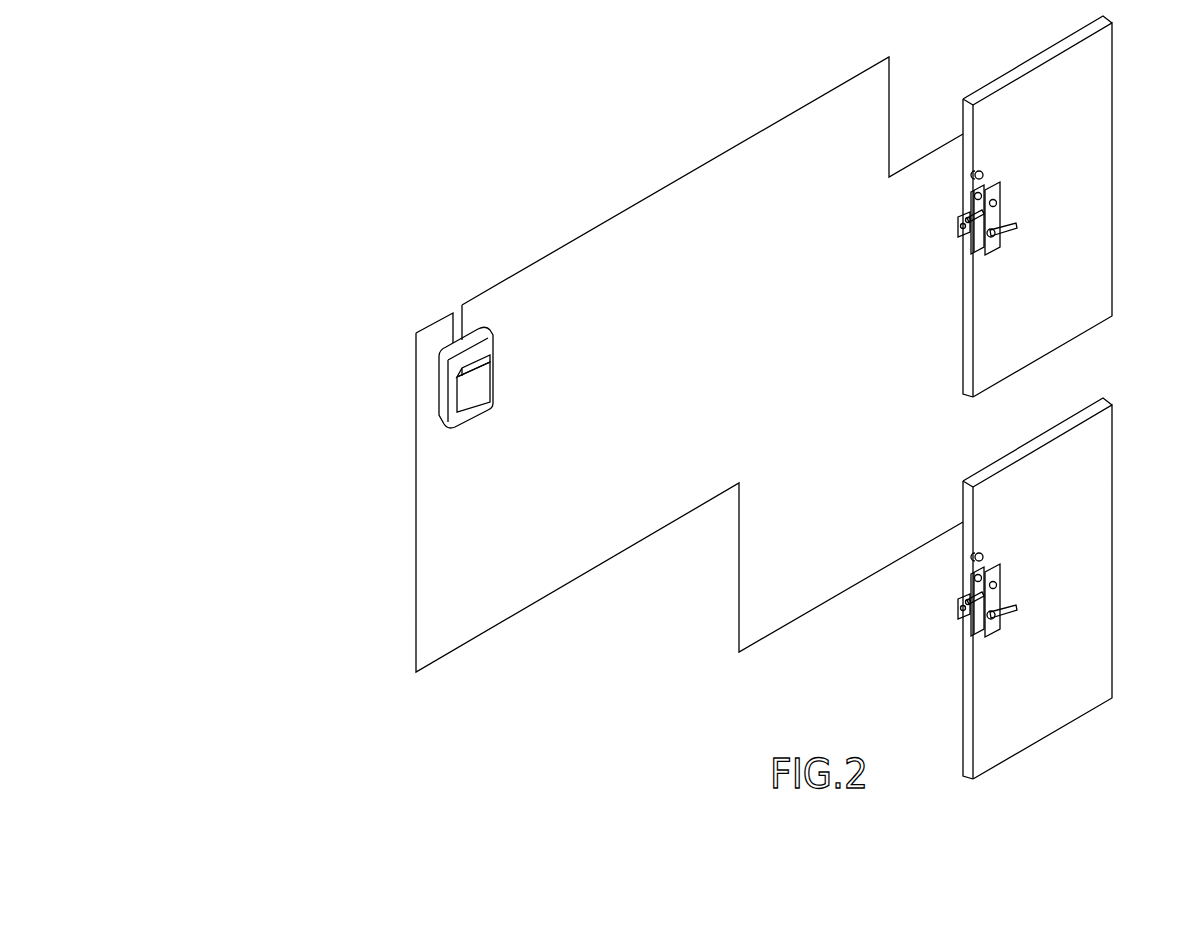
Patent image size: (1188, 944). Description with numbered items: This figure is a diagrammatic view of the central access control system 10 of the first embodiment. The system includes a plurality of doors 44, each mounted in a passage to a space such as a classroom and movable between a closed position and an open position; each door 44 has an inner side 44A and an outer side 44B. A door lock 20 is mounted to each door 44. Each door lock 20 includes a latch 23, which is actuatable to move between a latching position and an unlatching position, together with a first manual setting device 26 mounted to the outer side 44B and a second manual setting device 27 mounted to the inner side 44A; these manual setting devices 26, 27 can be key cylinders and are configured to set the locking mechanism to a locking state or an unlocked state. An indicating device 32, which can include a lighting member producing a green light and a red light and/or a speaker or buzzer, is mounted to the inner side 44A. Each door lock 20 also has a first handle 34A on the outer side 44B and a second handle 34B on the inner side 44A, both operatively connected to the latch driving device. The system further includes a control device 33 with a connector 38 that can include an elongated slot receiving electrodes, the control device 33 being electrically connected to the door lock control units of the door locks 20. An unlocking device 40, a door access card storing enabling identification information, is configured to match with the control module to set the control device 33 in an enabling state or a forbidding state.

The central access control system 10 is at (550, 150).
The door lock 20 is at (1004, 172).
The latch 23 is at (960, 228).
The first manual setting device 26 is at (996, 203).
The second manual setting device 27 is at (975, 195).
The indicating device 32 is at (975, 174).
The control device 33 is at (484, 330).
The first handle 34A is at (970, 212).
The second handle 34B is at (1018, 229).
The connector 38 is at (483, 380).
The unlocking device 40 is at (489, 352).
The door 44 is at (1113, 216).
The inner side 44A is at (963, 304).
The outer side 44B is at (985, 340).